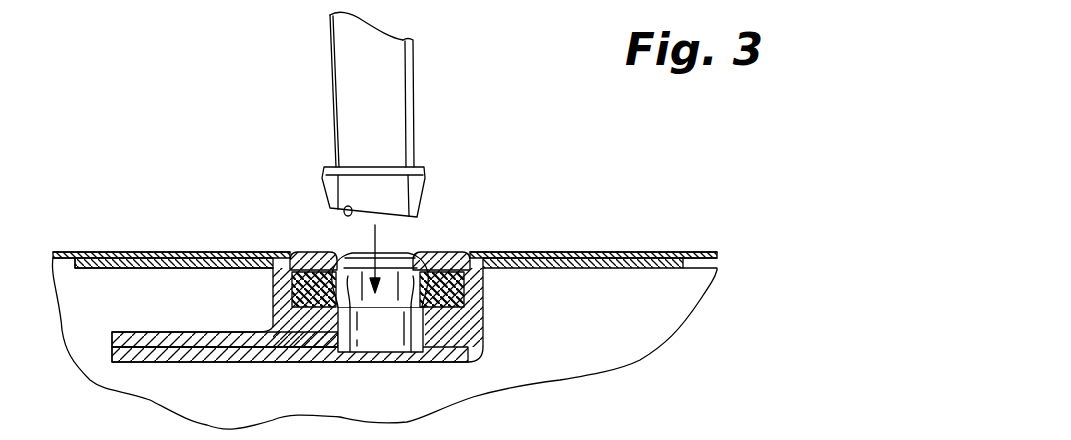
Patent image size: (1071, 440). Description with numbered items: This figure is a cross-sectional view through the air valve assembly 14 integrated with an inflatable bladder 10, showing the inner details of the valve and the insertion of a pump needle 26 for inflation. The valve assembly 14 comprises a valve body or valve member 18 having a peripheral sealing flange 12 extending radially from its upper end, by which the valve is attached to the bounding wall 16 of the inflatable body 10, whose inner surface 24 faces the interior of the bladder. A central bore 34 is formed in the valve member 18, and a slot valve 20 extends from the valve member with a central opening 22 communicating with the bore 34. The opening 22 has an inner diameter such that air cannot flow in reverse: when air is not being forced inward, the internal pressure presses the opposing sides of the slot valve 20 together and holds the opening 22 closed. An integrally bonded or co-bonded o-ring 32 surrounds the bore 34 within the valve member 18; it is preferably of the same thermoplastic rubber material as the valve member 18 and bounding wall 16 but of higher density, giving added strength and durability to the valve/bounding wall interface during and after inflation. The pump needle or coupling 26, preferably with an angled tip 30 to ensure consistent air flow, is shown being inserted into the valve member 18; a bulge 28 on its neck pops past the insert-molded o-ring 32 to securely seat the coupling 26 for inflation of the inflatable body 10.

The inflatable bladder 10 is at (589, 228).
The peripheral sealing flange 12 is at (176, 278).
The air valve assembly 14 is at (312, 252).
The bounding wall 16 is at (88, 251).
The valve member 18 is at (486, 324).
The slot valve 20 is at (174, 357).
The central opening 22 is at (112, 343).
The inner surface 24 is at (597, 341).
The pump needle 26 is at (340, 82).
The bulge 28 is at (421, 166).
The tool tip 30 is at (347, 206).
The o-ring 32 is at (458, 257).
The central bore 34 is at (382, 340).